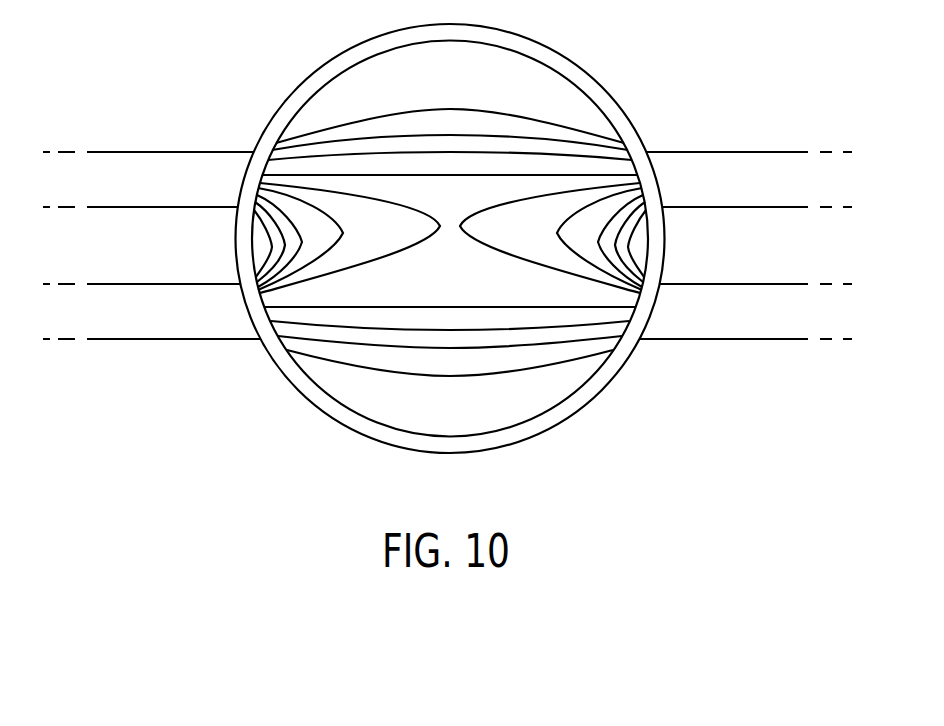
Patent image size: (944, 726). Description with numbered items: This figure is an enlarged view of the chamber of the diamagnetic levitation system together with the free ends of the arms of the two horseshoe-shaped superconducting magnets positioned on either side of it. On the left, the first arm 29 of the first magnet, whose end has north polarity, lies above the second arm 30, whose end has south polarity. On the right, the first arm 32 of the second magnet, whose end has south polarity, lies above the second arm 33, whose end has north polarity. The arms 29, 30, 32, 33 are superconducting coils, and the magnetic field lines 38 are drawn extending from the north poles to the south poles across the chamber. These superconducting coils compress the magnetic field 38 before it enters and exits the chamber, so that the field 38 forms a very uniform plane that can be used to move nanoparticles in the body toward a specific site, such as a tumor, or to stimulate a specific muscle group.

The first arm 29 is at (172, 152).
The second arm 30 is at (163, 318).
The first arm 32 is at (728, 152).
The second arm 33 is at (735, 315).
The magnetic field lines 38 is at (450, 108).